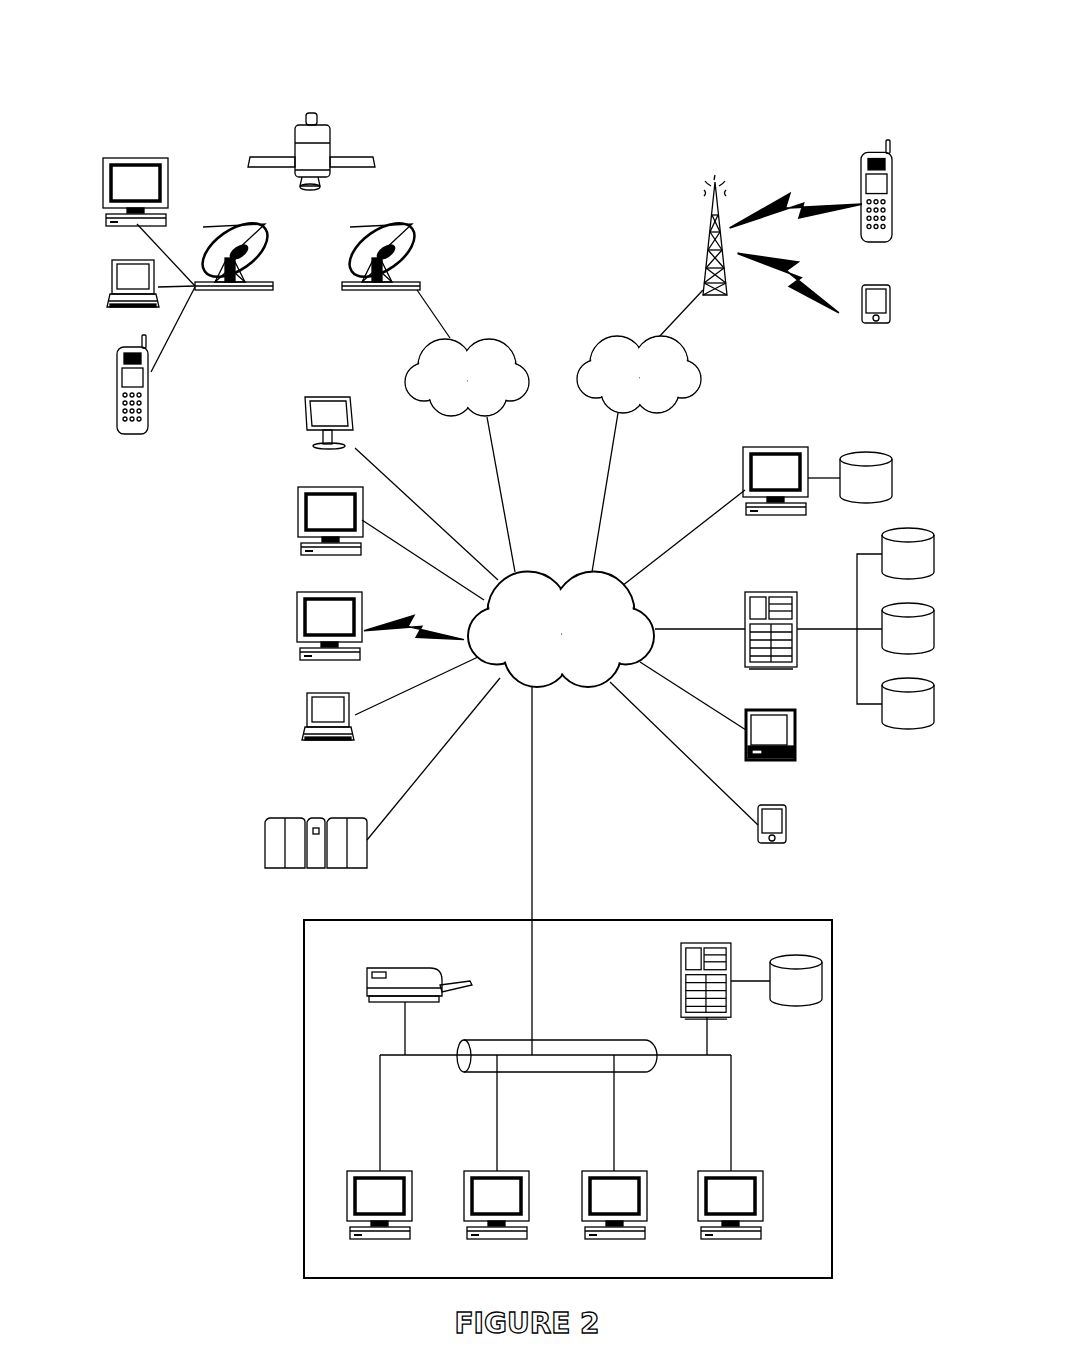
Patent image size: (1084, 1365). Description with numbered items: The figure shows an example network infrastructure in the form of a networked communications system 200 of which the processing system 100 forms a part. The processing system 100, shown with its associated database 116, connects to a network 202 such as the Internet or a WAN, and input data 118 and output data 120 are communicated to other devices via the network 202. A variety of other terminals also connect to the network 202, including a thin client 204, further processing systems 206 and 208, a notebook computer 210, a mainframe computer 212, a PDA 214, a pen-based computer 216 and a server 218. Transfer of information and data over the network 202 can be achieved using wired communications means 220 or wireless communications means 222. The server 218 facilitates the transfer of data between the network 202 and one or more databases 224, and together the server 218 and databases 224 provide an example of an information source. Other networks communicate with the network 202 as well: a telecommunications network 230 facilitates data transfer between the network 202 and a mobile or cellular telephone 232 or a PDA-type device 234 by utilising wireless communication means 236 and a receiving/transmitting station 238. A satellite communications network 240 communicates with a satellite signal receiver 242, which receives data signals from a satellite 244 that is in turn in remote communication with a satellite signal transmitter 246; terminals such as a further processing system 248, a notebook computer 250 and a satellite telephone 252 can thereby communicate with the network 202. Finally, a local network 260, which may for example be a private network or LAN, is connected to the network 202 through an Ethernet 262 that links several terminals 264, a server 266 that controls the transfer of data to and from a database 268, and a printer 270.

The networked communications system 200 is at (596, 98).
The processing system 100 is at (778, 447).
The database 116 is at (866, 477).
The input data 118 is at (688, 528).
The output data 120 is at (745, 490).
The network 202 is at (561, 630).
The thin client 204 is at (305, 445).
The further processing system 206 is at (298, 528).
The further processing system 208 is at (297, 628).
The notebook computer 210 is at (300, 728).
The mainframe computer 212 is at (265, 842).
The PDA 214 is at (787, 827).
The pen-based computer 216 is at (797, 736).
The server 218 is at (753, 592).
The wired communications means 220 is at (397, 575).
The wireless communications means 222 is at (414, 641).
The databases 224 is at (908, 628).
The telecommunications network 230 is at (639, 374).
The mobile or cellular telephone 232 is at (897, 190).
The PDA-type device 234 is at (893, 310).
The wireless communication means 236 is at (793, 244).
The receiving/transmitting station 238 is at (703, 253).
The satellite communications network 240 is at (467, 377).
The satellite signal receiver 242 is at (413, 248).
The satellite 244 is at (363, 153).
The satellite signal transmitter 246 is at (228, 292).
The further processing system 248 is at (133, 158).
The notebook computer 250 is at (107, 289).
The satellite telephone 252 is at (133, 437).
The local network 260 is at (302, 1027).
The Ethernet 262 is at (558, 1040).
The terminals 264 is at (378, 1239).
The server 266 is at (680, 988).
The database 268 is at (776, 980).
The printer 270 is at (405, 968).